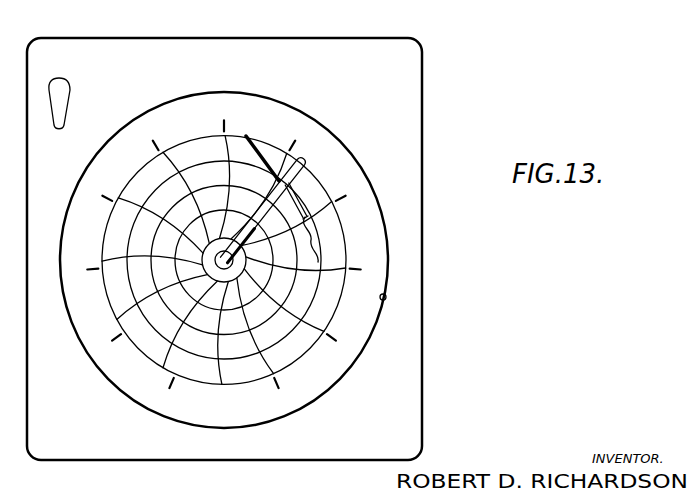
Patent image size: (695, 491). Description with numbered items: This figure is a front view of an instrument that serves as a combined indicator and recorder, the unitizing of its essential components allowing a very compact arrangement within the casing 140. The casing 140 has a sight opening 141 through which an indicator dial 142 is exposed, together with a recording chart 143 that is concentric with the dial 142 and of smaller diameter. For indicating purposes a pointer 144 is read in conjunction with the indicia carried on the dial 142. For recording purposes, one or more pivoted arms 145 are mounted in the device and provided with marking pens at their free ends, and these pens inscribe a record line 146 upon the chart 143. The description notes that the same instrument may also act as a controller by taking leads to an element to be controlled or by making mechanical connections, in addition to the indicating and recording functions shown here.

The casing 140 is at (405, 84).
The sight opening 141 is at (386, 297).
The indicator dial 142 is at (352, 313).
The recording chart 143 is at (240, 376).
The pointer 144 is at (307, 169).
The pivoted arm 145 is at (268, 148).
The record line 146 is at (318, 238).